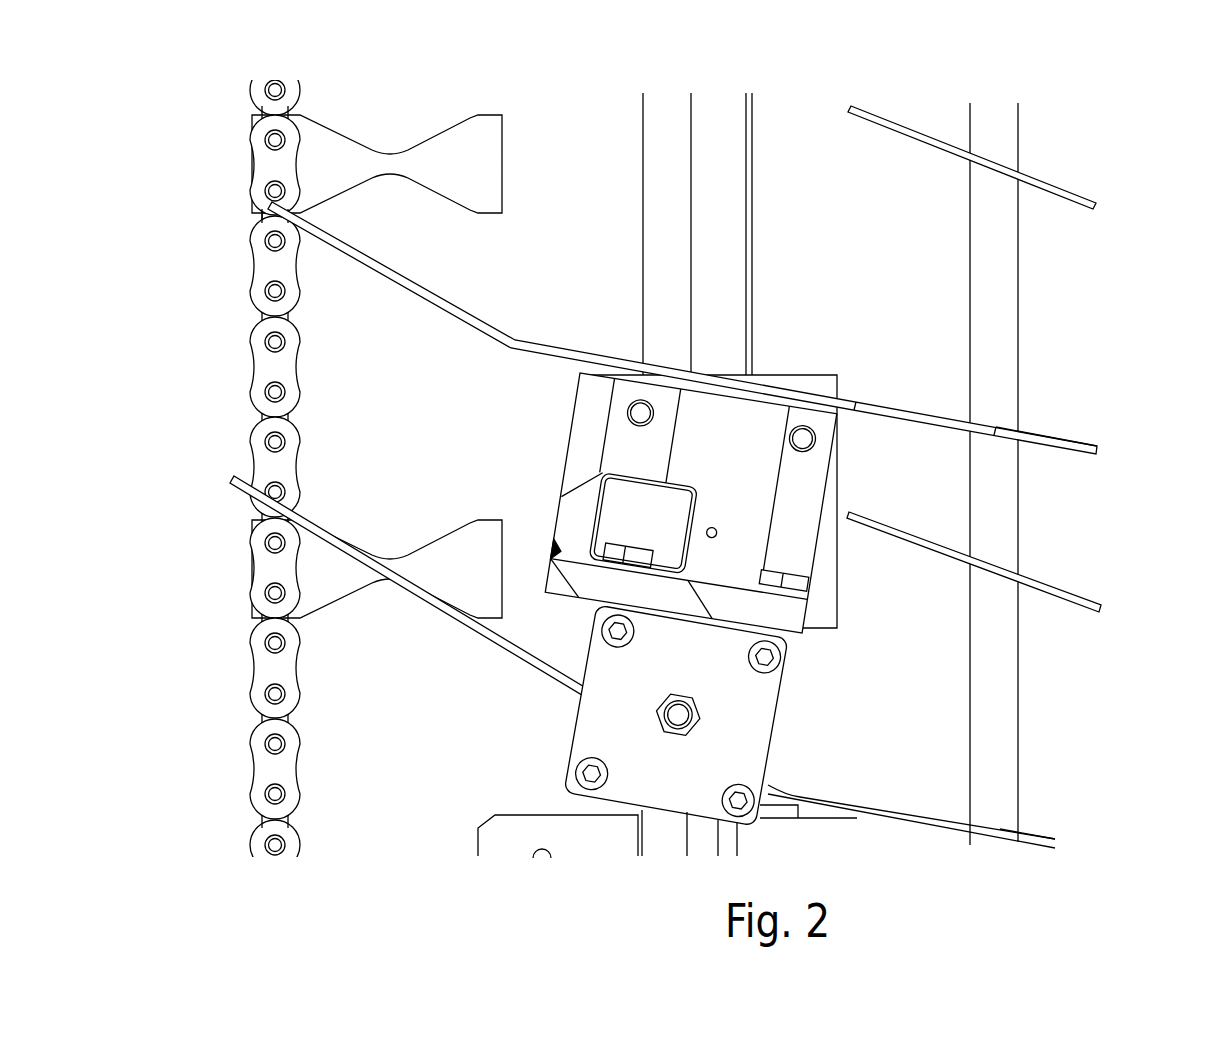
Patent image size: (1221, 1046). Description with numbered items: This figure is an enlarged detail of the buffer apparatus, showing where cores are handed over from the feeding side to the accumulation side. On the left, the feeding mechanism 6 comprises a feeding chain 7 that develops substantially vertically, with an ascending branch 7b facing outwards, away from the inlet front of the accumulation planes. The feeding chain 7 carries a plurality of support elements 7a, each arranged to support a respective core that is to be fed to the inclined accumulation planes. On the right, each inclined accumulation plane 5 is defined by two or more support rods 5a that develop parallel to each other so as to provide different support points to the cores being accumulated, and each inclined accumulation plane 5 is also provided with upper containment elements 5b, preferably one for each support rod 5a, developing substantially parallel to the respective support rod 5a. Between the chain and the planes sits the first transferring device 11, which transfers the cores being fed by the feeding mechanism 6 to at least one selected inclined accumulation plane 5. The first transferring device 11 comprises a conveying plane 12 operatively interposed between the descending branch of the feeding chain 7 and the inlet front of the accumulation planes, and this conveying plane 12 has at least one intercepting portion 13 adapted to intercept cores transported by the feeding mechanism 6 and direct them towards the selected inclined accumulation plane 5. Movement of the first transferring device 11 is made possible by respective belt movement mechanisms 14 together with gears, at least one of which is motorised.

The inclined accumulation plane 5 is at (1097, 436).
The support rod 5a is at (1060, 447).
The upper containment element 5b is at (1075, 198).
The feeding mechanism 6 is at (204, 221).
The feeding chain 7 is at (250, 665).
The support element 7a is at (317, 163).
The ascending branch 7b is at (260, 414).
The first transferring device 11 is at (552, 606).
The conveying plane 12 is at (680, 376).
The intercepting portion 13 is at (495, 335).
The belt movement mechanism 14 is at (645, 828).